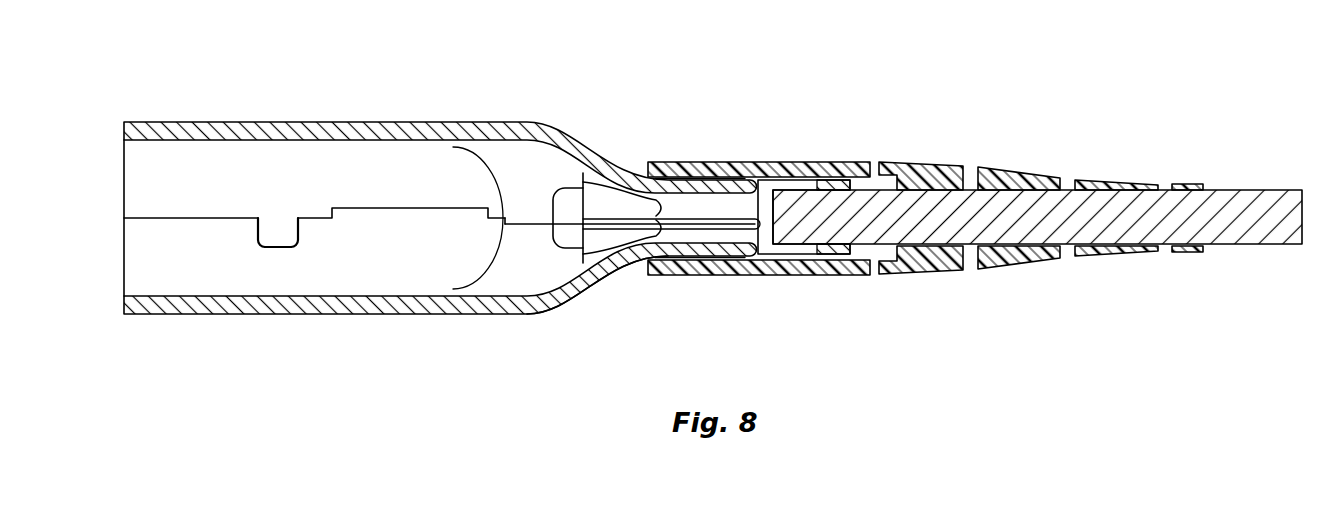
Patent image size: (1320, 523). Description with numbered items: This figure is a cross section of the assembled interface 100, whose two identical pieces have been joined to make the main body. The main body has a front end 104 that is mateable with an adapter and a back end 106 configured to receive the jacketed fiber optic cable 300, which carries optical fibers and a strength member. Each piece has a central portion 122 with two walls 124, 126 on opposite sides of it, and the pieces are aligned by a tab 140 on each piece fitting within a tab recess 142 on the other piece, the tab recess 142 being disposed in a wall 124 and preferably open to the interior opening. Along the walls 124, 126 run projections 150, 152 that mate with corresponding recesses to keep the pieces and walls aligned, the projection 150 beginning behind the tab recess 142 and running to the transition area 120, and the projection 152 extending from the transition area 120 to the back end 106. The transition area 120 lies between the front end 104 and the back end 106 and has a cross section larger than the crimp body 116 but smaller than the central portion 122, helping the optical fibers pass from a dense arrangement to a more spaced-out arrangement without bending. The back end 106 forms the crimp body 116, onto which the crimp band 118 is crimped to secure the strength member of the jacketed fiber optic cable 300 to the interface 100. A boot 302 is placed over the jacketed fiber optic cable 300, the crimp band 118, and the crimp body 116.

The interface 100 is at (556, 122).
The front end 104 is at (117, 261).
The back end 106 is at (770, 180).
The crimp body 116 is at (705, 162).
The crimp band 118 is at (816, 255).
The transition area 120 is at (586, 296).
The central portion 122 is at (352, 121).
The wall 124 is at (400, 266).
The wall 126 is at (400, 182).
The tab 140 is at (279, 234).
The tab recess 142 is at (267, 249).
The projection 150 is at (449, 207).
The projection 152 is at (699, 222).
The jacketed fiber optic cable 300 is at (1236, 190).
The boot 302 is at (1030, 166).